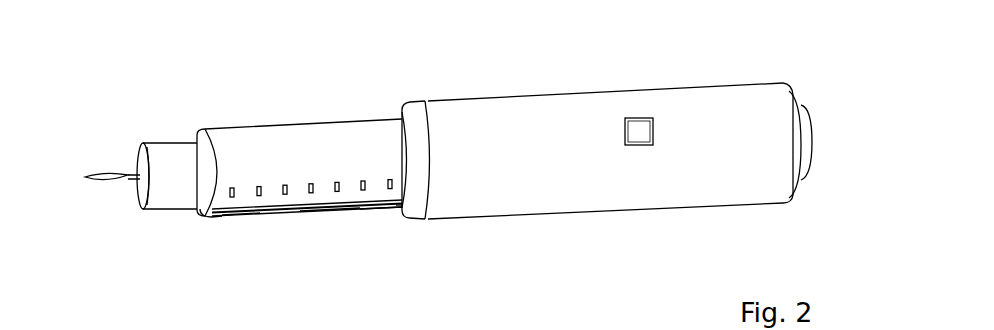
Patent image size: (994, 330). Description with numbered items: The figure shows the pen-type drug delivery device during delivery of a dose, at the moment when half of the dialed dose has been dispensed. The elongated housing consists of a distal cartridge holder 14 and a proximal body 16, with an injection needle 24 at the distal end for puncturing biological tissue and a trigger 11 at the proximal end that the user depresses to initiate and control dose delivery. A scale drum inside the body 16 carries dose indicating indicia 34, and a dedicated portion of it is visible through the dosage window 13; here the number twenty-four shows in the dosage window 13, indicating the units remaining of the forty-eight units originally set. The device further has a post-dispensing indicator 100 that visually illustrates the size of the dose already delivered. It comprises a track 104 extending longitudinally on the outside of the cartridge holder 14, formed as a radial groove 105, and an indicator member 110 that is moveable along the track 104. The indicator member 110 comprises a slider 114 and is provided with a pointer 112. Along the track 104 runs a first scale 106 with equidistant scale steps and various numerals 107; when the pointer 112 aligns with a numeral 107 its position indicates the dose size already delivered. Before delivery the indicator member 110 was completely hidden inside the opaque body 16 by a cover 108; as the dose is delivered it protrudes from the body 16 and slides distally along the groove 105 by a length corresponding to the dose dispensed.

The injection needle 24 is at (131, 177).
The cartridge holder 14 is at (269, 140).
The numerals 107 is at (255, 155).
The first scale 106 is at (294, 150).
The post-dispensing indicator 100 is at (257, 232).
The track 104 is at (220, 212).
The groove 105 is at (237, 213).
The pointer 112 is at (353, 205).
The indicator member 110 is at (386, 205).
The slider 114 is at (397, 213).
The cover 108 is at (439, 215).
The body 16 is at (452, 110).
The trigger 11 is at (803, 104).
The dose indicating indicia 34 is at (638, 125).
The dosage window 13 is at (642, 143).